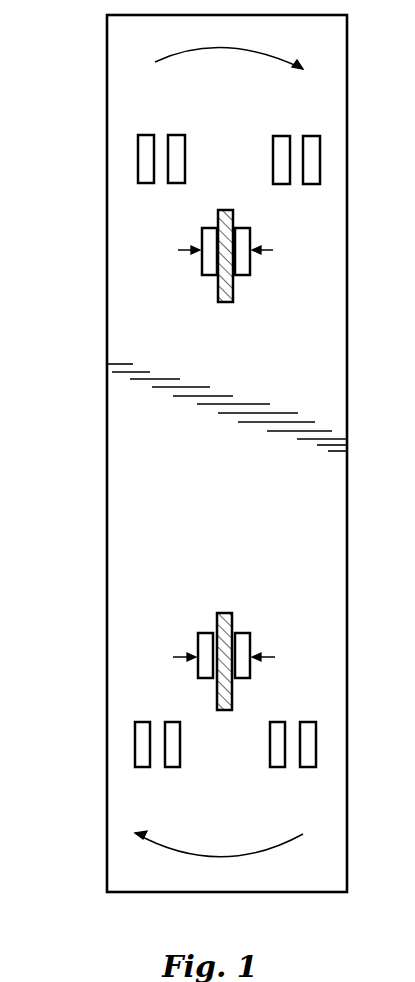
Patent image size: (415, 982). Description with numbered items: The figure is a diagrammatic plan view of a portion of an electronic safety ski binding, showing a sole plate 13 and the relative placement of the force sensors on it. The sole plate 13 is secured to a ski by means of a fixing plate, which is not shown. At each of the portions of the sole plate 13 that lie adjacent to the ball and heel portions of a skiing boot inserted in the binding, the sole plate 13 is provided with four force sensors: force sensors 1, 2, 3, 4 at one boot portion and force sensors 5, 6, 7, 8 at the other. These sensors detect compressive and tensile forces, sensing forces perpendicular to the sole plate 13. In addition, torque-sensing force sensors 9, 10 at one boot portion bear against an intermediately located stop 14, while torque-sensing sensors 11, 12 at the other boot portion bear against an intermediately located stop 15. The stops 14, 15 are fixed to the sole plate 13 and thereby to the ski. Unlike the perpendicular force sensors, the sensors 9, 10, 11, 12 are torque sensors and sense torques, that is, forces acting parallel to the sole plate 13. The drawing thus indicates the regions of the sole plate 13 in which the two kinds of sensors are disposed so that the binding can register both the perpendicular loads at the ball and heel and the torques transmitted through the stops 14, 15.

The force sensor 1 is at (147, 145).
The force sensor 2 is at (176, 145).
The force sensor 3 is at (283, 147).
The force sensor 4 is at (309, 145).
The force sensor 5 is at (143, 735).
The force sensor 6 is at (172, 735).
The force sensor 7 is at (278, 735).
The force sensor 8 is at (308, 735).
The torque-sensing force sensor 9 is at (208, 242).
The torque-sensing force sensor 10 is at (242, 240).
The torque-sensing sensor 11 is at (203, 650).
The torque-sensing sensor 12 is at (242, 645).
The sole plate 13 is at (123, 446).
The stop 14 is at (228, 283).
The stop 15 is at (222, 613).